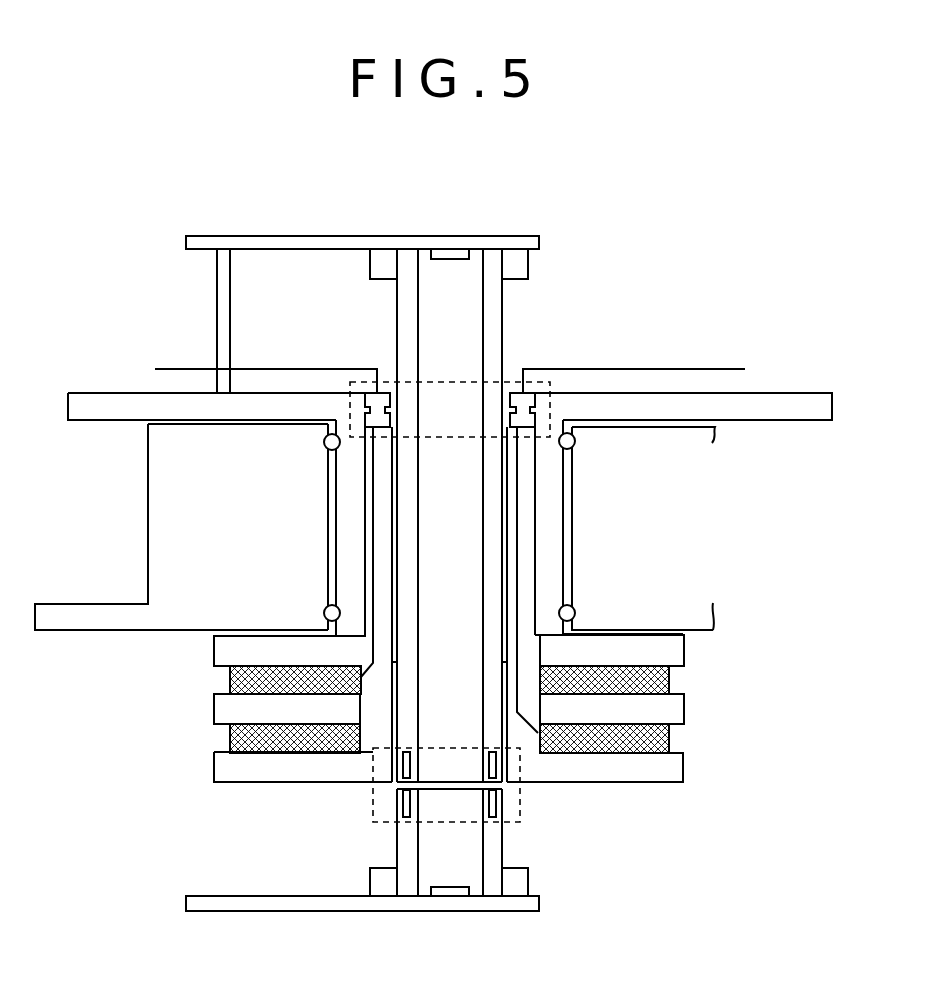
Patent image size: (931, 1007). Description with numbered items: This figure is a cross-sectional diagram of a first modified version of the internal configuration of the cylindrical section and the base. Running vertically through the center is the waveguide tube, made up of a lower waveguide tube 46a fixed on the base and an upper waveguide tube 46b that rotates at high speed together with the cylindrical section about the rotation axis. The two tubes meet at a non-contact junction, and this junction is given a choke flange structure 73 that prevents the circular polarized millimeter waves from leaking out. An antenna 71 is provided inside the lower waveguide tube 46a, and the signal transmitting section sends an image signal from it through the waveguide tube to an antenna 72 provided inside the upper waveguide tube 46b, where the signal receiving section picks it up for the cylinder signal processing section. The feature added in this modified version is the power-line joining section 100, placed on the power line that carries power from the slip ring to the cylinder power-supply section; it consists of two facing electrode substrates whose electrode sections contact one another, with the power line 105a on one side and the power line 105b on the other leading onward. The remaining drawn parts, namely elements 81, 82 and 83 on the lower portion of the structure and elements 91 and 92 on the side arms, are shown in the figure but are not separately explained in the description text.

The lower waveguide tube 46a is at (503, 842).
The upper waveguide tube 46b is at (502, 298).
The antenna 71 is at (452, 894).
The antenna 72 is at (450, 256).
The choke flange structure 73 is at (373, 801).
The brake plate 81 is at (672, 769).
The brake pads 82 is at (668, 680).
The armature 83 is at (505, 677).
The arm 91 is at (685, 410).
The link 92 is at (576, 443).
The power-line joining section 100 is at (509, 381).
The left plate 105a is at (327, 369).
The right plate 105b is at (652, 369).